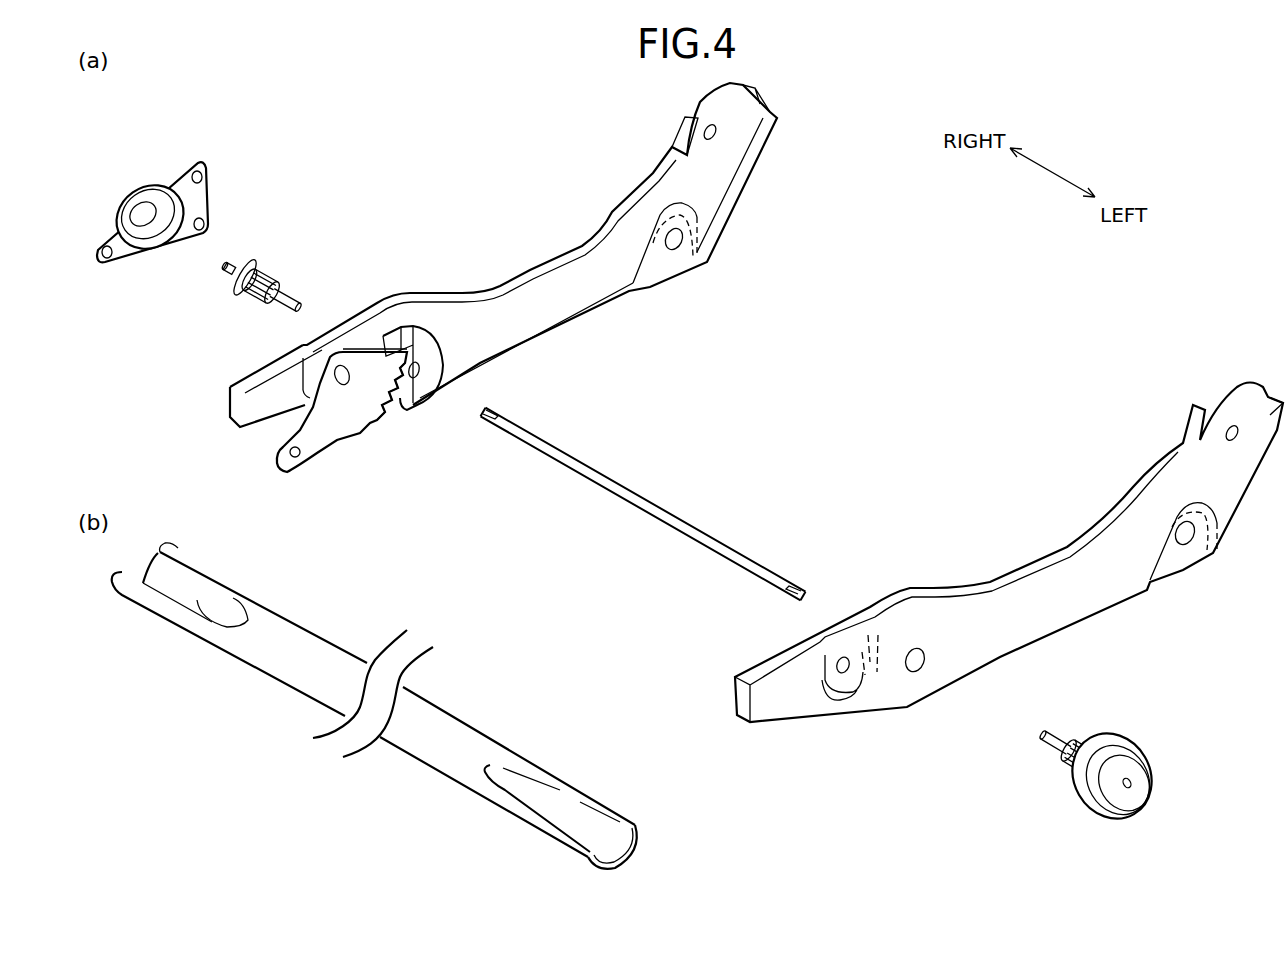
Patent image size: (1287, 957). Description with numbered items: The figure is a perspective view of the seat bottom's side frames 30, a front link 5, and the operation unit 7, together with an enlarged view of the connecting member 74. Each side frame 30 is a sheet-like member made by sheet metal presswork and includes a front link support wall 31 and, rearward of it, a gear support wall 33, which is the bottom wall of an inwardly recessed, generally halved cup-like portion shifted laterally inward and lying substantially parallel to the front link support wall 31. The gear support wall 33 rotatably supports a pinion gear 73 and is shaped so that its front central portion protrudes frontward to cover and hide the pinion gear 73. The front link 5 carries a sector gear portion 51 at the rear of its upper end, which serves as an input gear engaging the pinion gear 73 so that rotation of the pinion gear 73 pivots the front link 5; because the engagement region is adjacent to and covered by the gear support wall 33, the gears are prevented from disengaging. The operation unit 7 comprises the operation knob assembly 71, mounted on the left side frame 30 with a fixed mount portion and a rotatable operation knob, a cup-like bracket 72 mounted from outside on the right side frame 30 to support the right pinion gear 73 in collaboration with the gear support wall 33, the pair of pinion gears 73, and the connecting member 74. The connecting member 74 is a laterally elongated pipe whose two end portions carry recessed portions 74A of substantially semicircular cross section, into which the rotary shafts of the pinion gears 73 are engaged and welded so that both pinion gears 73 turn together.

The front link 5 is at (348, 435).
The operation unit 7 is at (1149, 792).
The side frame 30 is at (619, 181).
The front link support wall 31 is at (355, 350).
The gear support wall 33 is at (433, 357).
The sector gear portion 51 is at (395, 403).
The operation knob assembly 71 is at (1160, 788).
The bracket 72 is at (149, 172).
The pinion gear 73 is at (273, 268).
The connecting member 74 is at (459, 638).
The recessed portion 74A is at (198, 598).